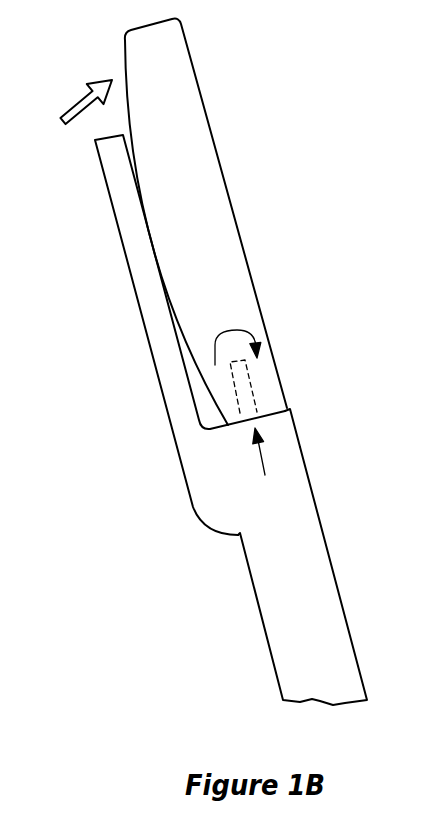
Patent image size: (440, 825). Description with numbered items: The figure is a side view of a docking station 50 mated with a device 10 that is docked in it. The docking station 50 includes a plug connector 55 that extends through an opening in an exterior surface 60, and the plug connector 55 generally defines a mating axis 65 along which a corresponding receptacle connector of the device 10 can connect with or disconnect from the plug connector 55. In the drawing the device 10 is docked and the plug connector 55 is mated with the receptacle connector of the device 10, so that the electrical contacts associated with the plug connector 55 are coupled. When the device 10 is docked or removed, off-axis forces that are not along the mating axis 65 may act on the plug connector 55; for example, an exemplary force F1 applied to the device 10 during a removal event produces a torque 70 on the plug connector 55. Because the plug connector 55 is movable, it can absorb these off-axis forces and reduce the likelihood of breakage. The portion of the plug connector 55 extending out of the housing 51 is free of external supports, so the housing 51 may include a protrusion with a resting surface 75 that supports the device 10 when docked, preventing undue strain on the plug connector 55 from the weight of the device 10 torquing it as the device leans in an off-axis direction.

The device 10 is at (233, 134).
The docking station 50 is at (168, 540).
The housing 51 is at (290, 562).
The plug connector 55 is at (252, 382).
The exterior surface 60 is at (287, 409).
The mating axis 65 is at (263, 458).
The torque 70 is at (237, 330).
The resting surface 75 is at (158, 264).
The force F1 is at (74, 113).